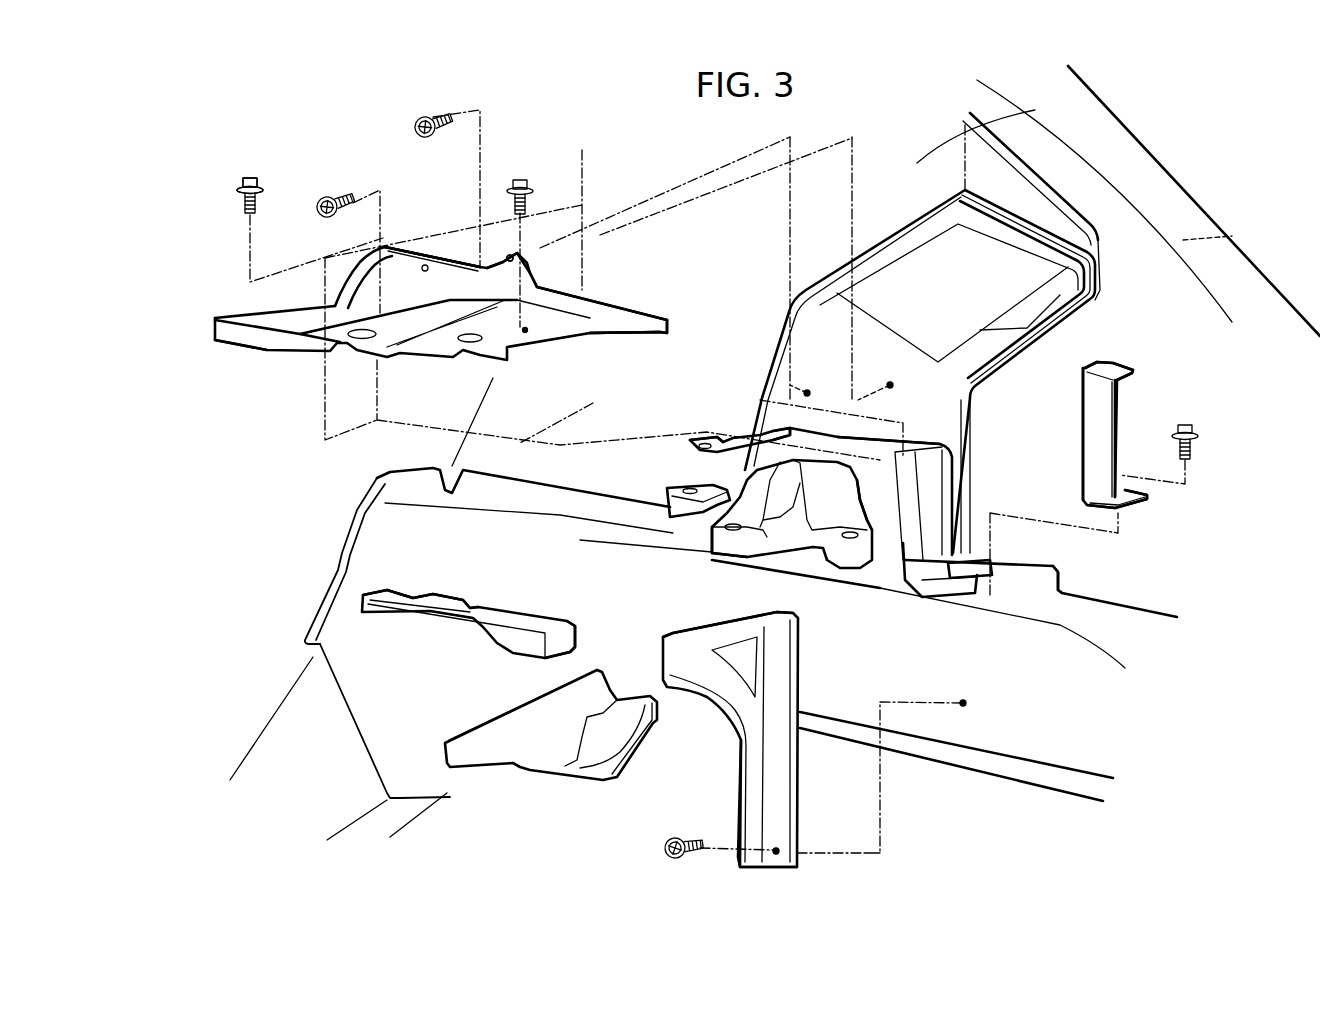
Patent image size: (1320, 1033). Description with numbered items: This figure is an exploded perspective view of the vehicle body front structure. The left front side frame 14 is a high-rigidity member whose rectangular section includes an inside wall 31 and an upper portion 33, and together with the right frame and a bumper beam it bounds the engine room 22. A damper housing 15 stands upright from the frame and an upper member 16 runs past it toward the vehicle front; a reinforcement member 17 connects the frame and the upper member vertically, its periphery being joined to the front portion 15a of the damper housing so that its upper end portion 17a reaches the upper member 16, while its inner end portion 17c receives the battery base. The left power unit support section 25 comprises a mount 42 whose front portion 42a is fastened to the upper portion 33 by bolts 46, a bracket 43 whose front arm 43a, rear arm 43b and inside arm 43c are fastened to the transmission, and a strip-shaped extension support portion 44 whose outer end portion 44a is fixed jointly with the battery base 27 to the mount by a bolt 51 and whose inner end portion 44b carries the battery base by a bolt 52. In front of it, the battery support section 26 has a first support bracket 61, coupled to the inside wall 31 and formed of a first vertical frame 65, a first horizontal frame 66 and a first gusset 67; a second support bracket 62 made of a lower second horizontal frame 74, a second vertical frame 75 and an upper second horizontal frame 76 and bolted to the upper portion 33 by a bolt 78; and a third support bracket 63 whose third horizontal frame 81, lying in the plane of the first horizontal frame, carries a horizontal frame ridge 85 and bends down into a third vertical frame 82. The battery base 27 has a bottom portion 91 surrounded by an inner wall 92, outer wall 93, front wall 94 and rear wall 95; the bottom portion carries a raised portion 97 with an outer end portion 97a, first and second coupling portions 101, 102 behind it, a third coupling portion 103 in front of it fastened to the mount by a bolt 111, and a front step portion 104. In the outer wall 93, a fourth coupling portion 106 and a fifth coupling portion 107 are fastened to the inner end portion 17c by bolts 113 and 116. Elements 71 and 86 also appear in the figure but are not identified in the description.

The front side frame 14 is at (1160, 606).
The damper housing 15 is at (1020, 118).
The front portion 15a is at (1085, 232).
The upper member 16 is at (1190, 212).
The reinforcement member 17 is at (1020, 250).
The upper end portion 17a is at (990, 213).
The inner end portion 17c is at (835, 387).
The engine room 22 is at (650, 718).
The left power unit support section 25 is at (923, 437).
The battery support section 26 is at (723, 763).
The battery base 27 is at (627, 293).
The inside wall 31 is at (1003, 733).
The upper portion 33 is at (1023, 597).
The mount 42 is at (857, 432).
The front portion 42a is at (937, 600).
The bracket 43 is at (712, 545).
The front arm 43a is at (870, 517).
The rear arm 43b is at (668, 490).
The inside arm 43c is at (708, 540).
The extension support portion 44 is at (768, 428).
The outer end portion 44a is at (855, 435).
The inner end portion 44b is at (692, 443).
The bolts 46 is at (962, 552).
The bolt 51 is at (252, 172).
The bolt 52 is at (250, 186).
The first support bracket 61 is at (800, 700).
The second support bracket 62 is at (1130, 410).
The third support bracket 63 is at (417, 628).
The first vertical frame 65 is at (777, 780).
The first horizontal frame 66 is at (745, 620).
The first gusset 67 is at (740, 723).
The bolt 71 is at (663, 846).
The lower second horizontal frame 74 is at (1130, 497).
The second vertical frame 75 is at (1090, 448).
The upper second horizontal frame 76 is at (1110, 363).
The bolt 78 is at (1193, 420).
The third horizontal frame 81 is at (527, 607).
The third vertical frame 82 is at (487, 620).
The horizontal frame ridge 85 is at (447, 590).
The bar end 86 is at (563, 640).
The bottom portion 91 is at (560, 307).
The inner wall 92 is at (257, 341).
The outer wall 93 is at (583, 302).
The front wall 94 is at (613, 340).
The rear wall 95 is at (263, 310).
The raised portion 97 is at (433, 313).
The outer end portion 97a is at (530, 297).
The first coupling portion 101 is at (393, 275).
The second coupling portion 102 is at (313, 325).
The third coupling portion 103 is at (560, 388).
The front step portion 104 is at (633, 320).
The fourth coupling portion 106 is at (493, 253).
The fifth coupling portion 107 is at (420, 247).
The bolt 111 is at (527, 175).
The bolt 113 is at (417, 138).
The bolt 116 is at (320, 200).